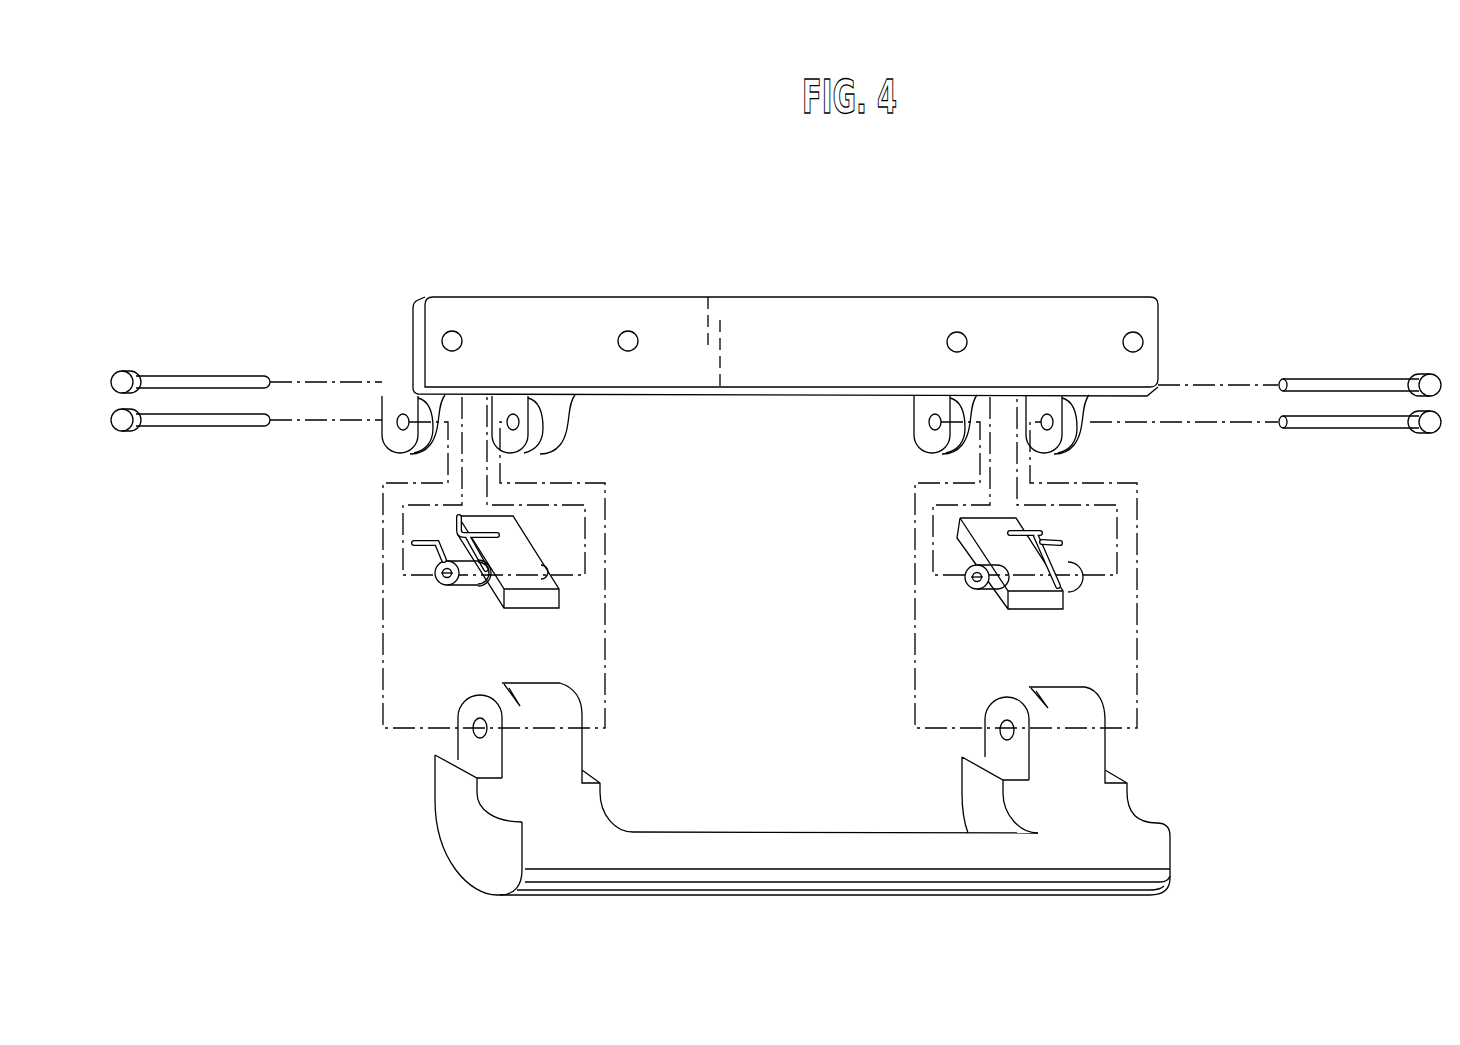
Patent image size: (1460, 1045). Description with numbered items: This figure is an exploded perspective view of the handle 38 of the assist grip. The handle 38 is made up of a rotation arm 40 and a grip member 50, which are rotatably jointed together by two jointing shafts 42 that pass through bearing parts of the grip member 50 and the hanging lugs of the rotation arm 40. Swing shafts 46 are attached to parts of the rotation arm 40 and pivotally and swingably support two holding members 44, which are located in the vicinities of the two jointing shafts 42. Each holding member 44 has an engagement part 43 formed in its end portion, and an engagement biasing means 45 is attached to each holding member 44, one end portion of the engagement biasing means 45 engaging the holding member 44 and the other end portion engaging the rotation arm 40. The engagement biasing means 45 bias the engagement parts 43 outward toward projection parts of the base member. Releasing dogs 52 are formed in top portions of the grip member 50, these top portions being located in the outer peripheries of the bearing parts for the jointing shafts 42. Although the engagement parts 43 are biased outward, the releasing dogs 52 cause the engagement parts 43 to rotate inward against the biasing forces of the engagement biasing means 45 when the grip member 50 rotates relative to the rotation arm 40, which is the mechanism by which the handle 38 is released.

The handle 38 is at (1235, 262).
The rotation arm 40 is at (798, 318).
The jointing shaft 42 is at (122, 430).
The engagement part 43 is at (447, 526).
The holding member 44 is at (523, 549).
The engagement biasing means 45 is at (423, 546).
The swing shaft 46 is at (122, 372).
The grip member 50 is at (792, 855).
The releasing dog 52 is at (512, 668).